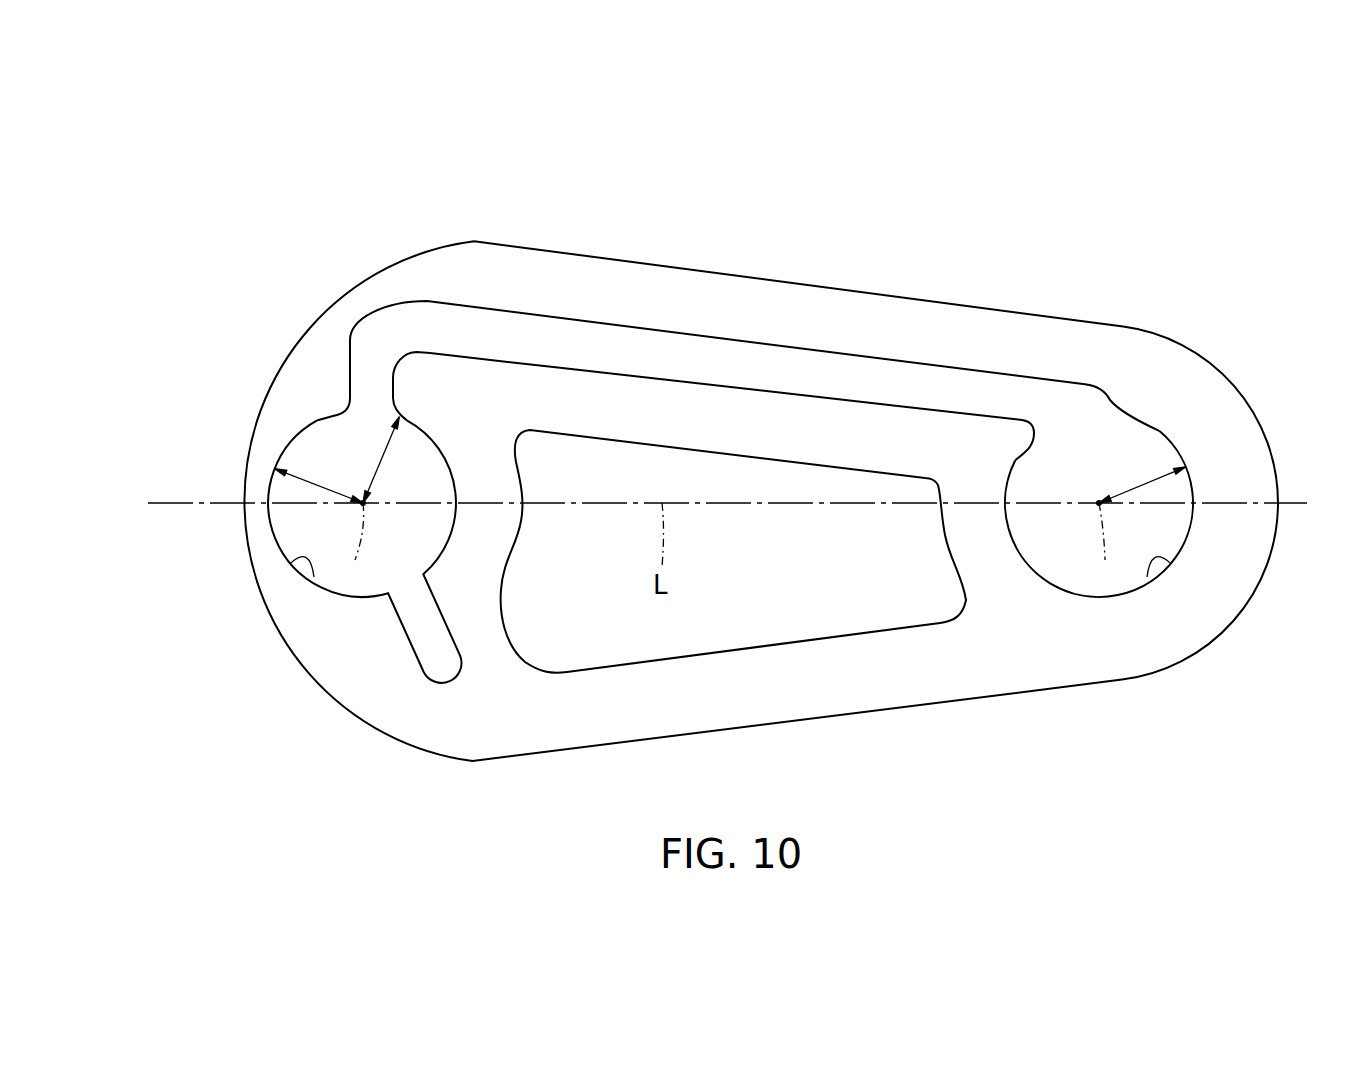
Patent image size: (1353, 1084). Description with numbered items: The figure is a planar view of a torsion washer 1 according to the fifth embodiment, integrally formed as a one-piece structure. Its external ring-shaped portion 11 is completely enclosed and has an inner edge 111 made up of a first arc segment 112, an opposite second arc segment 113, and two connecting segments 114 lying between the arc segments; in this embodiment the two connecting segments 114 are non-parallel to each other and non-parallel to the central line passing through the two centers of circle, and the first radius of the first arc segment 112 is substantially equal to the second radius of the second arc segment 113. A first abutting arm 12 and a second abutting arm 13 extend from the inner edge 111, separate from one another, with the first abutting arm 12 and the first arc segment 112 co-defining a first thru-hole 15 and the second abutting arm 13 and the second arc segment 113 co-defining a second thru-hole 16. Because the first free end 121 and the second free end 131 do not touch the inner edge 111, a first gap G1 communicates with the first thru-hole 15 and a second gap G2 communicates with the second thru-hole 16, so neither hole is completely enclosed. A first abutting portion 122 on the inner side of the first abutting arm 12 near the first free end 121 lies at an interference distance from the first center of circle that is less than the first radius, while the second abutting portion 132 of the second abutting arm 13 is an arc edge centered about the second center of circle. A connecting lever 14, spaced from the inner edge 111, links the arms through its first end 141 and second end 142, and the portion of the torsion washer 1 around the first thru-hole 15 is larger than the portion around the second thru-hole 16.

The torsion washer 1 is at (1294, 172).
The external ring-shaped portion 11 is at (773, 276).
The inner edge 111 is at (234, 125).
The first arc segment 112 is at (310, 577).
The second arc segment 113 is at (1153, 577).
The connecting segments 114 is at (685, 335).
The first abutting arm 12 is at (126, 325).
The first free end 121 is at (410, 362).
The first abutting portion 122 is at (390, 413).
The second abutting arm 13 is at (1108, 274).
The second free end 131 is at (1007, 417).
The second abutting portion 132 is at (1017, 460).
The connecting lever 14 is at (758, 455).
The first end 141 is at (520, 393).
The second end 142 is at (930, 440).
The first thru-hole 15 is at (282, 535).
The second thru-hole 16 is at (1182, 535).
The first gap G1 is at (449, 316).
The second gap G2 is at (962, 387).